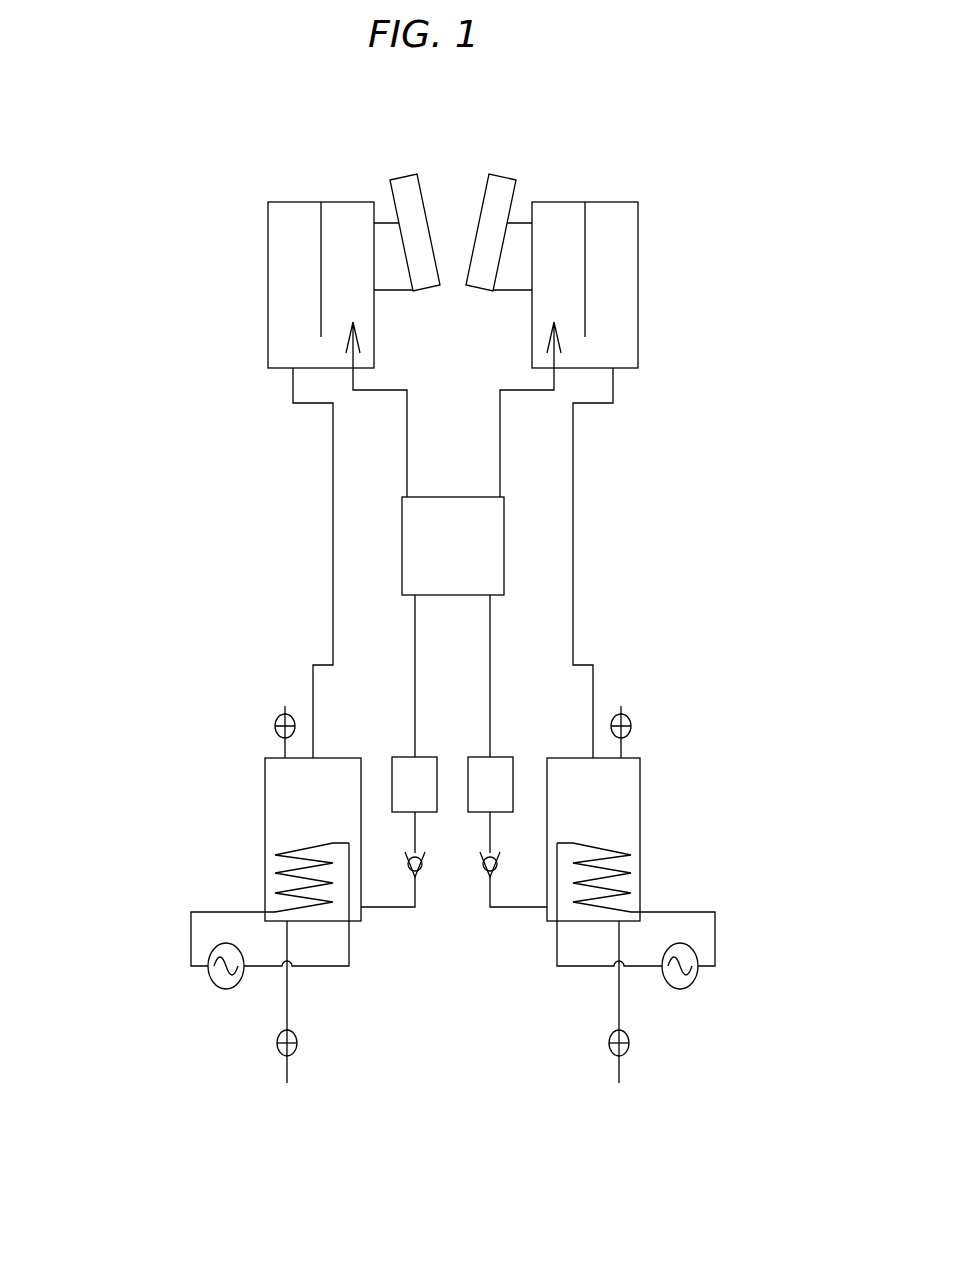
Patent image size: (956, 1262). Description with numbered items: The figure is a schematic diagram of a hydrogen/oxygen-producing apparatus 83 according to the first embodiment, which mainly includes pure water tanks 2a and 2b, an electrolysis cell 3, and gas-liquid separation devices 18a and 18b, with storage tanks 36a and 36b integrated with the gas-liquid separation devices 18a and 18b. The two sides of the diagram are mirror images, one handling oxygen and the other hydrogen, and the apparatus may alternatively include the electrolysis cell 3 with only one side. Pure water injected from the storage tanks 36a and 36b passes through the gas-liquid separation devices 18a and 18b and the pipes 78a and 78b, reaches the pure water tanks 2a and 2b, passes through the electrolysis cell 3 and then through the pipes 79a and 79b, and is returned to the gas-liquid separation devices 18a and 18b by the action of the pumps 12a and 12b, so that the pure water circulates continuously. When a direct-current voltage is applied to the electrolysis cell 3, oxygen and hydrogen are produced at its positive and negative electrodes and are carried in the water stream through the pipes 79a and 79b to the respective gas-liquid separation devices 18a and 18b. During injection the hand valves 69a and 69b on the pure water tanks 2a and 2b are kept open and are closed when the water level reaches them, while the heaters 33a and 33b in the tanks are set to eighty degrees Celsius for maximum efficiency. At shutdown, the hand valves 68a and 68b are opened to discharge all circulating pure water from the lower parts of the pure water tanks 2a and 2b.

The hydrogen/oxygen-producing apparatus 83 is at (150, 105).
The gas-liquid separation device 18a is at (633, 317).
The gas-liquid separation device 18b is at (268, 319).
The storage tank 36a is at (483, 227).
The storage tank 36b is at (412, 207).
The pipe 79a is at (500, 462).
The pipe 79b is at (407, 465).
The electrolysis cell 3 is at (482, 547).
The pipe 78a is at (573, 607).
The pipe 78b is at (333, 607).
The pump 12a is at (503, 755).
The pump 12b is at (398, 755).
The hand valve 69a is at (630, 717).
The hand valve 69b is at (276, 719).
The pure water tank 2a is at (598, 786).
The pure water tank 2b is at (280, 787).
The heater 33a is at (598, 848).
The heater 33b is at (307, 849).
The hand valve 68a is at (629, 1043).
The hand valve 68b is at (277, 1043).